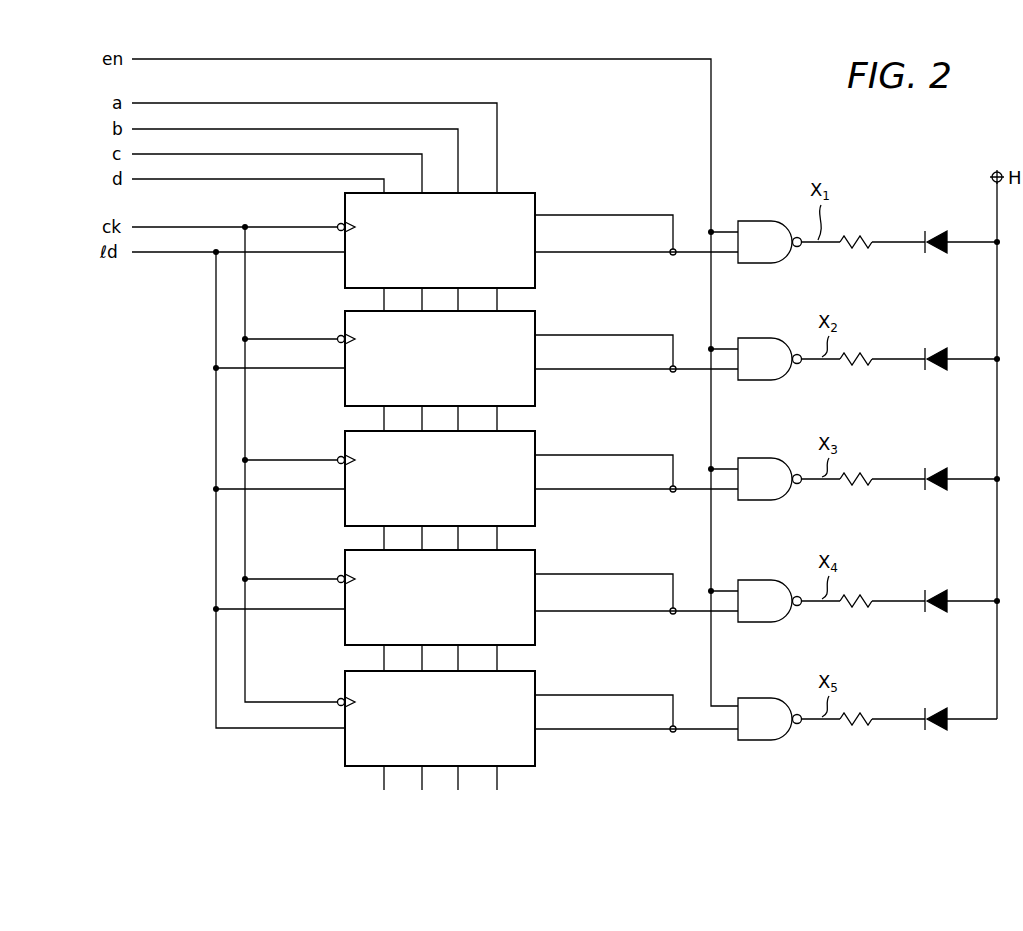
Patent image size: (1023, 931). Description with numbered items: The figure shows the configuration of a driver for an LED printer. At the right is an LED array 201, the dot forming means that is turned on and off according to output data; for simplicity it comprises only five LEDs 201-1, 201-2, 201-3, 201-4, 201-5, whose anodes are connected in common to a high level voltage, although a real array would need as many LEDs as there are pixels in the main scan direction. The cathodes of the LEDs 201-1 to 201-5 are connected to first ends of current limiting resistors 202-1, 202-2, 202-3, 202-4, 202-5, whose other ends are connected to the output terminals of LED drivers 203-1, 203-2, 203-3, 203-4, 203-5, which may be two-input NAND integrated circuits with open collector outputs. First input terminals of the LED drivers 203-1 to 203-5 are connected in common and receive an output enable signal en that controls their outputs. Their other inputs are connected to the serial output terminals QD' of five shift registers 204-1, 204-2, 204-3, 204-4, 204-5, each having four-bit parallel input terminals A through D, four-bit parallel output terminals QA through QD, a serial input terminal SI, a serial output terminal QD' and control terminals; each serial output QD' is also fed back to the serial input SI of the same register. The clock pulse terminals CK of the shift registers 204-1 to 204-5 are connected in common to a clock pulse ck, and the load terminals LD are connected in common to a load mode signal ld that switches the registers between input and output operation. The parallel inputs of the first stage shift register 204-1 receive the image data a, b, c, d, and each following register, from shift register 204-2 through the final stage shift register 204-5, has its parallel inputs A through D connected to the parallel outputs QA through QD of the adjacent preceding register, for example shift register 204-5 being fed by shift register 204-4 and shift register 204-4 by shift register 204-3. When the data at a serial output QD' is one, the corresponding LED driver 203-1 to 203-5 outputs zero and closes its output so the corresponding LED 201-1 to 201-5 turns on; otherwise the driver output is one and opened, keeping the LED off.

The LED array 201 is at (936, 226).
The LED 201-1 is at (938, 253).
The LED 201-2 is at (938, 370).
The LED 201-3 is at (938, 490).
The LED 201-4 is at (938, 612).
The LED 201-5 is at (938, 730).
The current limiting resistor 202-1 is at (860, 248).
The current limiting resistor 202-2 is at (860, 365).
The current limiting resistor 202-3 is at (860, 485).
The current limiting resistor 202-4 is at (860, 607).
The current limiting resistor 202-5 is at (860, 725).
The LED driver 203-1 is at (757, 263).
The LED driver 203-2 is at (757, 380).
The LED driver 203-3 is at (757, 500).
The LED driver 203-4 is at (757, 622).
The LED driver 203-5 is at (757, 740).
The shift register 204-1 is at (516, 193).
The shift register 204-2 is at (513, 311).
The shift register 204-3 is at (513, 431).
The shift register 204-4 is at (513, 550).
The shift register 204-5 is at (513, 671).